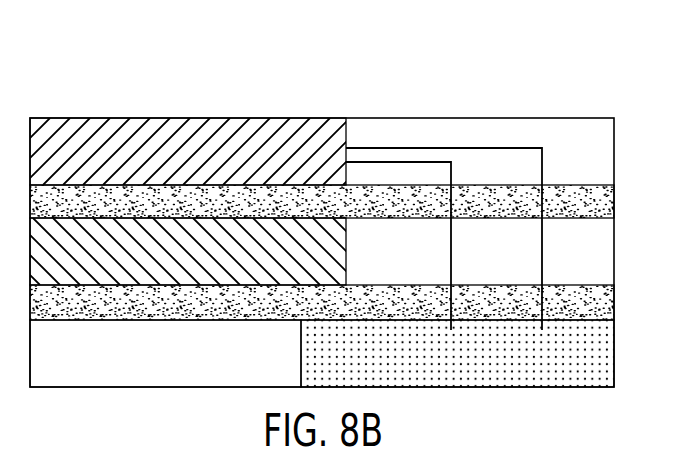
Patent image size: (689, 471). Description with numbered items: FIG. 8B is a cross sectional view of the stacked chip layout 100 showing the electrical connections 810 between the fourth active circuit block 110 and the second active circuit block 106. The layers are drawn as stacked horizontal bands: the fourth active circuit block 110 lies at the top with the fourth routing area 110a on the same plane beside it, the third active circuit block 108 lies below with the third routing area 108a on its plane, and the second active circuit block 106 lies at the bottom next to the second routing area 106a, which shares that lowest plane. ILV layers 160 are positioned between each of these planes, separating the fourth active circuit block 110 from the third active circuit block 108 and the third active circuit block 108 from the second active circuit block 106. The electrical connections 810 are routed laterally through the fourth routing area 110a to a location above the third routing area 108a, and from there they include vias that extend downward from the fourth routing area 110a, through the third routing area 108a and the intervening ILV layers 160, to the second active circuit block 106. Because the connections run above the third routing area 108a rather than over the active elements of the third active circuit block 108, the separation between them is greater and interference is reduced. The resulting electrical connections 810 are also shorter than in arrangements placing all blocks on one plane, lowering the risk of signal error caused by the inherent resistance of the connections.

The stacked chip layout 100 is at (49, 83).
The fourth active circuit block 110 is at (178, 164).
The fourth routing area 110a is at (557, 164).
The ILV layers 160 is at (314, 212).
The third active circuit block 108 is at (173, 258).
The third routing area 108a is at (457, 264).
The second routing area 106a is at (147, 360).
The second active circuit block 106 is at (443, 360).
The electrical connections 810 is at (451, 232).